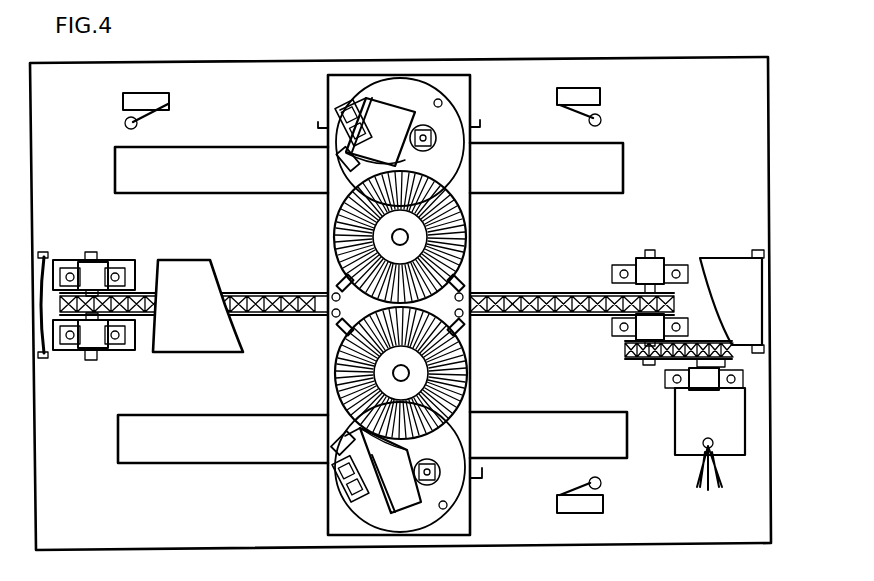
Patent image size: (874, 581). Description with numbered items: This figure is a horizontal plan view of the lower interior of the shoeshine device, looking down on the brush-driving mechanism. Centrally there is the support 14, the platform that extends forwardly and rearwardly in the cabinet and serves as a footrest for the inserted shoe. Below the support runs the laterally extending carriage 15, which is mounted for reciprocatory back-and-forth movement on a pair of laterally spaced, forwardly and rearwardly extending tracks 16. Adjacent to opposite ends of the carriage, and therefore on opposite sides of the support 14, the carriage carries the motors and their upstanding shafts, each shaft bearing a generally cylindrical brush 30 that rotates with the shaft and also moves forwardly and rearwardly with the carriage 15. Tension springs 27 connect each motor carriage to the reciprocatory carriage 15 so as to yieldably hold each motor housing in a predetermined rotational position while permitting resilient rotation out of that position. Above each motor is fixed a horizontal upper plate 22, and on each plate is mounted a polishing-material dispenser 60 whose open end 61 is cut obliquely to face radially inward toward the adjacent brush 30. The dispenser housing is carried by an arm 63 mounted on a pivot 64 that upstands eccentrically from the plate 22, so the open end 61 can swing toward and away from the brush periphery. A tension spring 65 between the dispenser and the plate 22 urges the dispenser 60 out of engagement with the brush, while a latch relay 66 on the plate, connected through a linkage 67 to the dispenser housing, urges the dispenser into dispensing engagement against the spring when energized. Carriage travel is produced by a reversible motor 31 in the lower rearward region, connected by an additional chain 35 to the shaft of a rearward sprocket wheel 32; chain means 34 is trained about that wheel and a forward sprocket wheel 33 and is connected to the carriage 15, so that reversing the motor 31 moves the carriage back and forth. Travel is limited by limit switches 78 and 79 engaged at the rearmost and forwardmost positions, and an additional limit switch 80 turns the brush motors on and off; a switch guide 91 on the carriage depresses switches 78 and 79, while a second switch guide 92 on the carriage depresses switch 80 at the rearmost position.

The support 14 is at (173, 342).
The carriage 15 is at (465, 88).
The tracks 16 is at (245, 158).
The upper plate 22 is at (455, 112).
The tension springs 27 is at (335, 283).
The brushes 30 is at (445, 240).
The reversible motor 31 is at (690, 433).
The sprocket wheel 32 is at (672, 262).
The sprocket wheel 33 is at (88, 258).
The chain means 34 is at (573, 292).
The chain 35 is at (655, 365).
The polishing-material dispenser 60 is at (393, 112).
The open end 61 is at (405, 160).
The arm 63 is at (430, 133).
The pivot 64 is at (432, 149).
The tension spring 65 is at (343, 165).
The latch relay 66 is at (346, 120).
The linkage 67 is at (368, 98).
The limit switch 78 is at (600, 96).
The limit switch 79 is at (167, 98).
The limit switch 80 is at (593, 506).
The switch guide 91 is at (318, 128).
The switch guide 92 is at (482, 478).